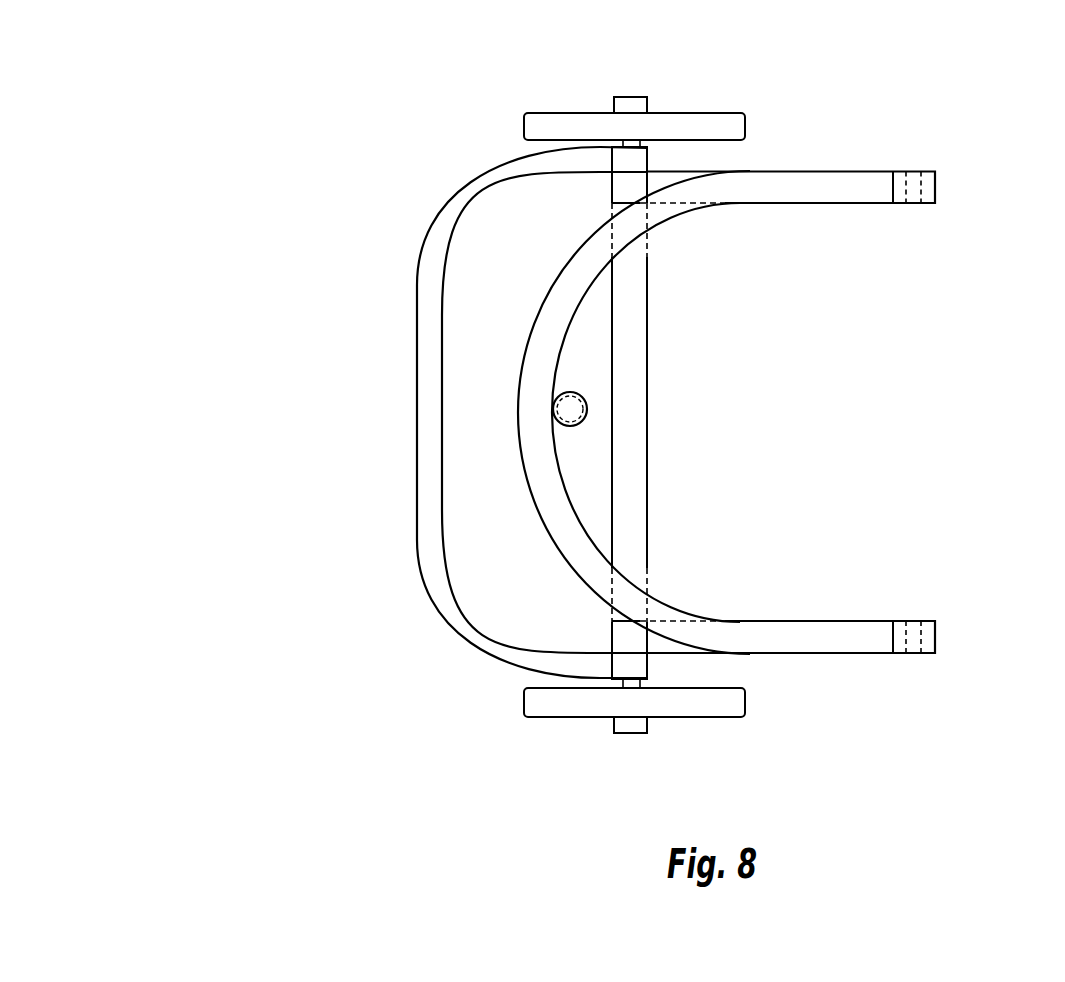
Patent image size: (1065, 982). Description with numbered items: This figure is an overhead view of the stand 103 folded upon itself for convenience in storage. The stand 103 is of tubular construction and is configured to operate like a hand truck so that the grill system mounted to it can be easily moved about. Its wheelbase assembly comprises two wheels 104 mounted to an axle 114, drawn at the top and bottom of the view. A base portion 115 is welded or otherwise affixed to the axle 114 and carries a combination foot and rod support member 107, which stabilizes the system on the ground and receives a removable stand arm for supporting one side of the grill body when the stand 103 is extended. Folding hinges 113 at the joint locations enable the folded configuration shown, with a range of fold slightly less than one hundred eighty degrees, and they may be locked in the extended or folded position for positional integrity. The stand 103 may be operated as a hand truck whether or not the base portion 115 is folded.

The stand 103 is at (292, 408).
The wheels 104 is at (695, 112).
The combination foot and rod support member 107 is at (567, 409).
The folding hinges 113 is at (927, 172).
The axle 114 is at (647, 455).
The base portion 115 is at (520, 405).